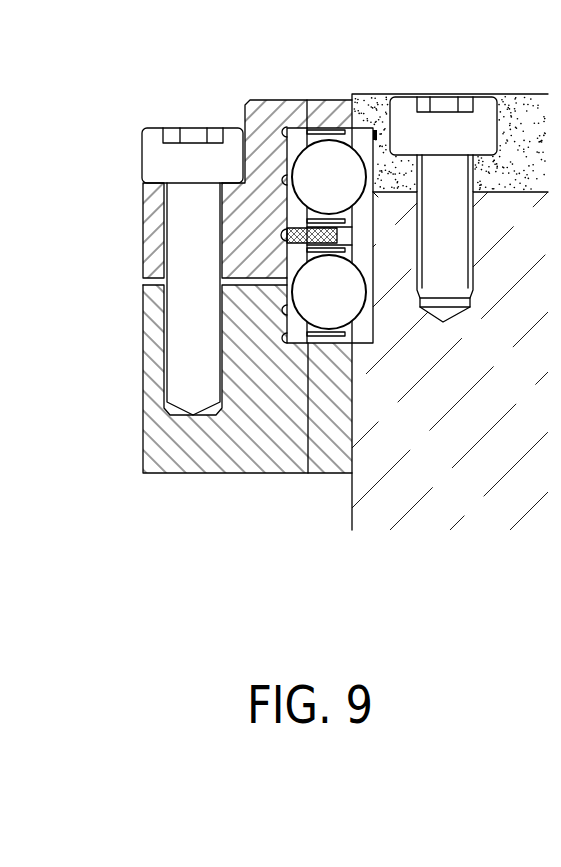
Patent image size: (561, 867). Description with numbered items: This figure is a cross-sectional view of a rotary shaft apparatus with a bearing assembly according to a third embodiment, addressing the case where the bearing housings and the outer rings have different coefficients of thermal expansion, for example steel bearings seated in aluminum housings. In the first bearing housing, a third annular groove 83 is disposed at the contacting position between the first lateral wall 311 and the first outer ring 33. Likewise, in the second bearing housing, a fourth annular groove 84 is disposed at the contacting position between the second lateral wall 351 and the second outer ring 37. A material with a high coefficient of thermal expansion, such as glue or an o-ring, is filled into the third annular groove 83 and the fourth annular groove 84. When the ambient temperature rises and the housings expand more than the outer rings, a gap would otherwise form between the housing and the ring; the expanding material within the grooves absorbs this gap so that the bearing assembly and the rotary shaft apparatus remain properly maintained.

The first lateral wall 311 is at (270, 180).
The third annular groove 83 is at (258, 176).
The first outer ring 33 is at (298, 137).
The second lateral wall 351 is at (230, 317).
The fourth annular groove 84 is at (278, 305).
The second outer ring 37 is at (298, 330).